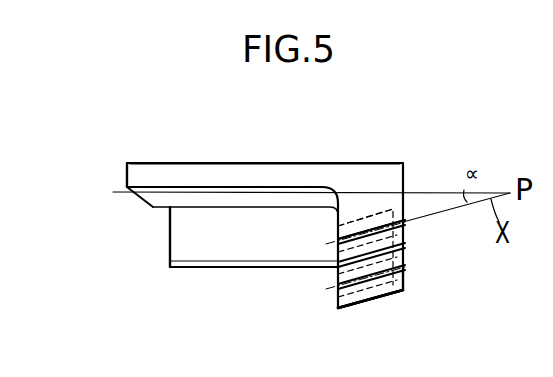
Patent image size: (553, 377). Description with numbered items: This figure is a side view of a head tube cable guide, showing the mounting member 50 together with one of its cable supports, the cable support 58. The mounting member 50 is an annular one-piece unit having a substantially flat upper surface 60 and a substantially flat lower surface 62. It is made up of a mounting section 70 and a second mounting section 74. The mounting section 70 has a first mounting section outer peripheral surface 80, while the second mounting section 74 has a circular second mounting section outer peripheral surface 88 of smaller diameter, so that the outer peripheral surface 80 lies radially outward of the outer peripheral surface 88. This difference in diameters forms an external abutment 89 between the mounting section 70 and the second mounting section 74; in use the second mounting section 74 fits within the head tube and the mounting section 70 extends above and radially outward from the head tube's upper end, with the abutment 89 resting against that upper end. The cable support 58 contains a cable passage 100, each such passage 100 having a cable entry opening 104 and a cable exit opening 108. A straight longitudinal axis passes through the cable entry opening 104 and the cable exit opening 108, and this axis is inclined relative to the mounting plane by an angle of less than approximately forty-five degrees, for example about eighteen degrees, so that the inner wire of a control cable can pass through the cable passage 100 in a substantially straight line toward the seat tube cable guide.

The mounting member 50 is at (126, 206).
The cable support 58 is at (404, 248).
The upper surface 60 is at (323, 163).
The lower surface 62 is at (290, 268).
The mounting section 70 is at (133, 188).
The second mounting section 74 is at (177, 251).
The first mounting section outer peripheral surface 80 is at (262, 172).
The second mounting section outer peripheral surface 88 is at (247, 247).
The external abutment 89 is at (150, 211).
The cable passage 100 is at (382, 211).
The cable entry opening 104 is at (404, 219).
The cable exit opening 108 is at (405, 271).